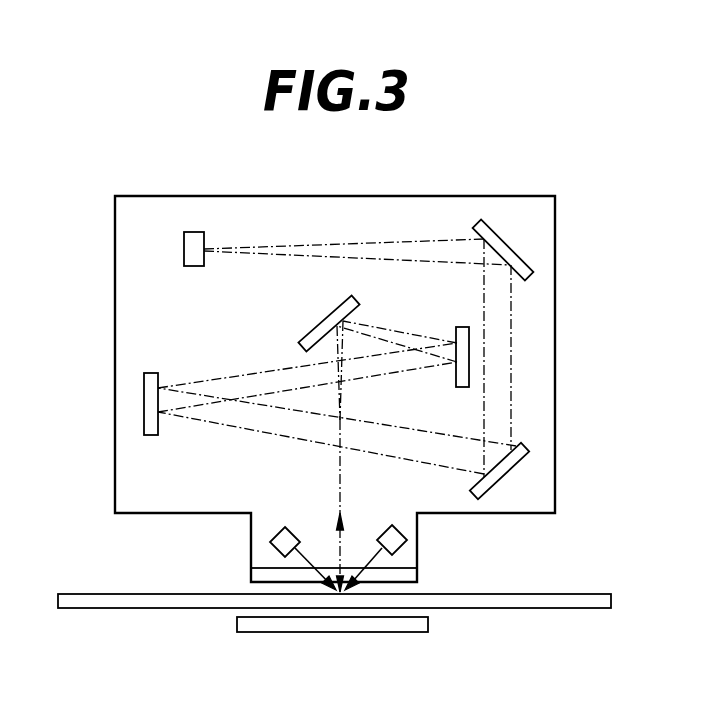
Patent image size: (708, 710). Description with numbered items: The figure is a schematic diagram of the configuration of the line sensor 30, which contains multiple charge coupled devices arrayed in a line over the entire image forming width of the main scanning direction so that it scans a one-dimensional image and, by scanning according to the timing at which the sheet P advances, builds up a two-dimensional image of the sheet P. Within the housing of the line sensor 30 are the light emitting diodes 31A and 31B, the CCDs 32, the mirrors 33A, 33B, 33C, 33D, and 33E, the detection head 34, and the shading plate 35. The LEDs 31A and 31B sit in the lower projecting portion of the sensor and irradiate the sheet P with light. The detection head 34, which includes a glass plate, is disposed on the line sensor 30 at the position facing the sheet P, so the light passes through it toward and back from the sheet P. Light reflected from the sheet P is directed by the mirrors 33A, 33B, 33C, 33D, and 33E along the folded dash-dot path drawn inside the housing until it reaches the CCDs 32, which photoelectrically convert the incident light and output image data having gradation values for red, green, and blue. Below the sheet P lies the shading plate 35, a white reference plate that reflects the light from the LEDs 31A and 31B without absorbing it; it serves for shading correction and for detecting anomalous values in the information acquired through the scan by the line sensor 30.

The line sensor 30 is at (357, 196).
The CCDs 32 is at (184, 250).
The mirror 33A is at (312, 338).
The mirror 33B is at (456, 378).
The mirror 33C is at (145, 410).
The mirror 33D is at (512, 470).
The mirror 33E is at (523, 257).
The light emitting diode 31A is at (403, 535).
The light emitting diode 31B is at (272, 538).
The detection head 34 is at (275, 575).
The shading plate 35 is at (428, 625).
The sheet P is at (579, 593).